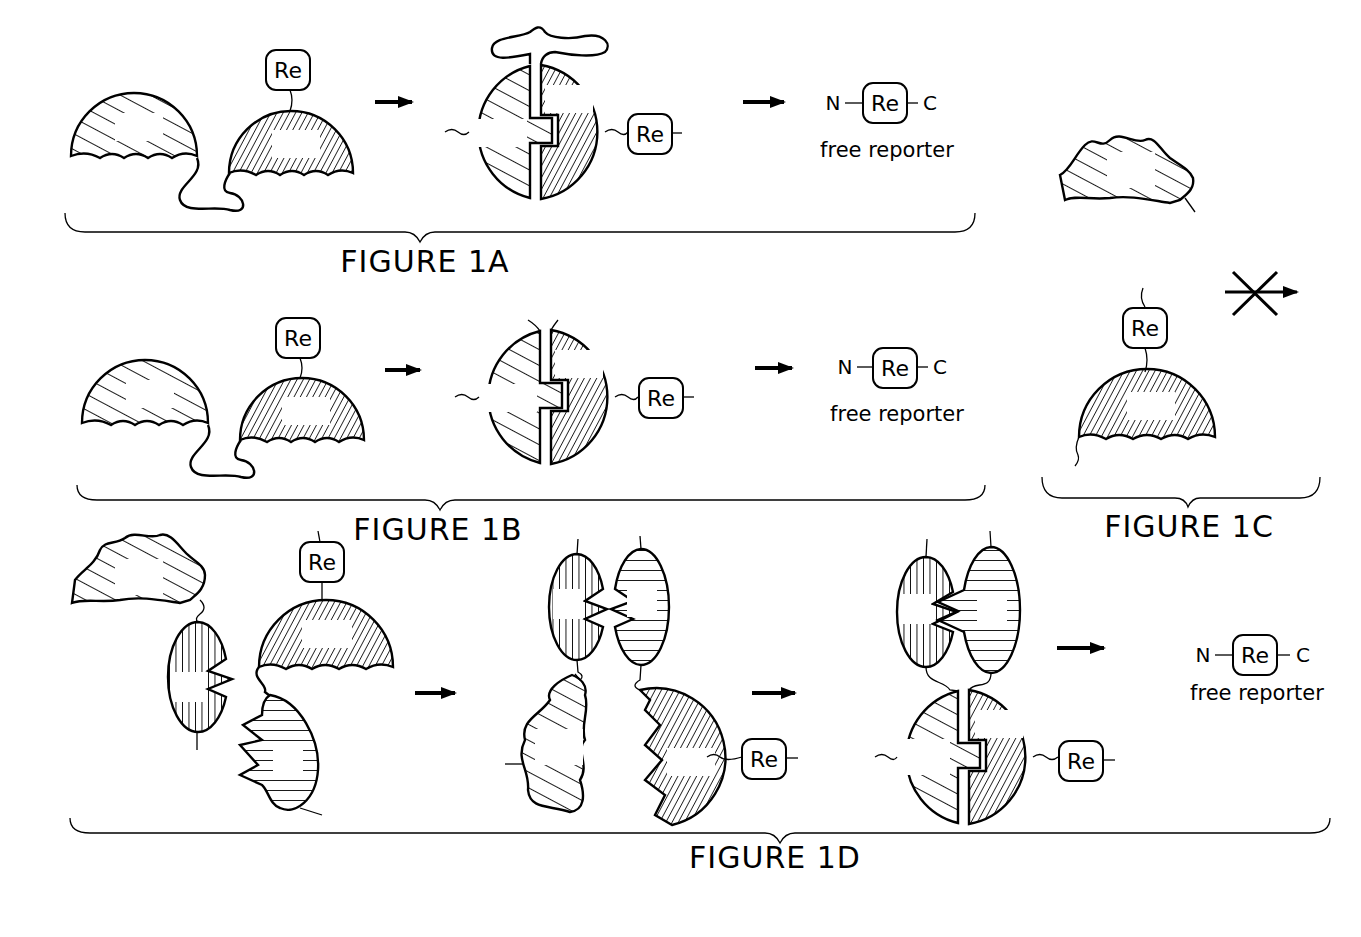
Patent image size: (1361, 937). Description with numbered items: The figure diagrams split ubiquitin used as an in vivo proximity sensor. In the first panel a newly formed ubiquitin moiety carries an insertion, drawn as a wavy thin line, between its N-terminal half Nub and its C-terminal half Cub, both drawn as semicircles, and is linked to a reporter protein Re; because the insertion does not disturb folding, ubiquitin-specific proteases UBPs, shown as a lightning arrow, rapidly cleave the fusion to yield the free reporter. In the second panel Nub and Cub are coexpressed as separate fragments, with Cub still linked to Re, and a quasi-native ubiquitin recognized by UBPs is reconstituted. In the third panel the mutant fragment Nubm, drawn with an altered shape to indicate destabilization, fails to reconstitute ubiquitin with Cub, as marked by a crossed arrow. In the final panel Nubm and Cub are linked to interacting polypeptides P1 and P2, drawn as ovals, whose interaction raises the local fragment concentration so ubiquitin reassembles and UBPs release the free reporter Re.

In FIG. 1A, the N-terminal half of ubiquitin Nub is at (132, 93).
In FIG. 1B, the N-terminal half of ubiquitin Nub is at (142, 360).
In FIG. 1A, the C-terminal half of ubiquitin Cub is at (291, 143).
In FIG. 1B, the C-terminal half of ubiquitin Cub is at (302, 410).
In FIG. 1C, the C-terminal half of ubiquitin Cub is at (1139, 428).
In FIG. 1D, the C-terminal half of ubiquitin Cub is at (326, 634).
In FIG. 1A, the reporter protein Re is at (290, 50).
In FIG. 1B, the reporter protein Re is at (300, 318).
In FIG. 1C, the reporter protein Re is at (1145, 318).
In FIG. 1D, the reporter protein Re is at (322, 554).
In FIG. 1A, the ubiquitin-specific proteases UBPs is at (622, 112).
In FIG. 1B, the ubiquitin-specific proteases UBPs is at (630, 378).
In FIG. 1D, the ubiquitin-specific proteases UBPs is at (1052, 737).
In FIG. 1C, the mutant N-terminal fragment of ubiquitin Nubm is at (1100, 138).
In FIG. 1D, the mutant N-terminal fragment of ubiquitin Nubm is at (110, 545).
In FIG. 1D, the first interacting polypeptide P1 is at (290, 763).
In FIG. 1D, the second interacting polypeptide P2 is at (200, 697).